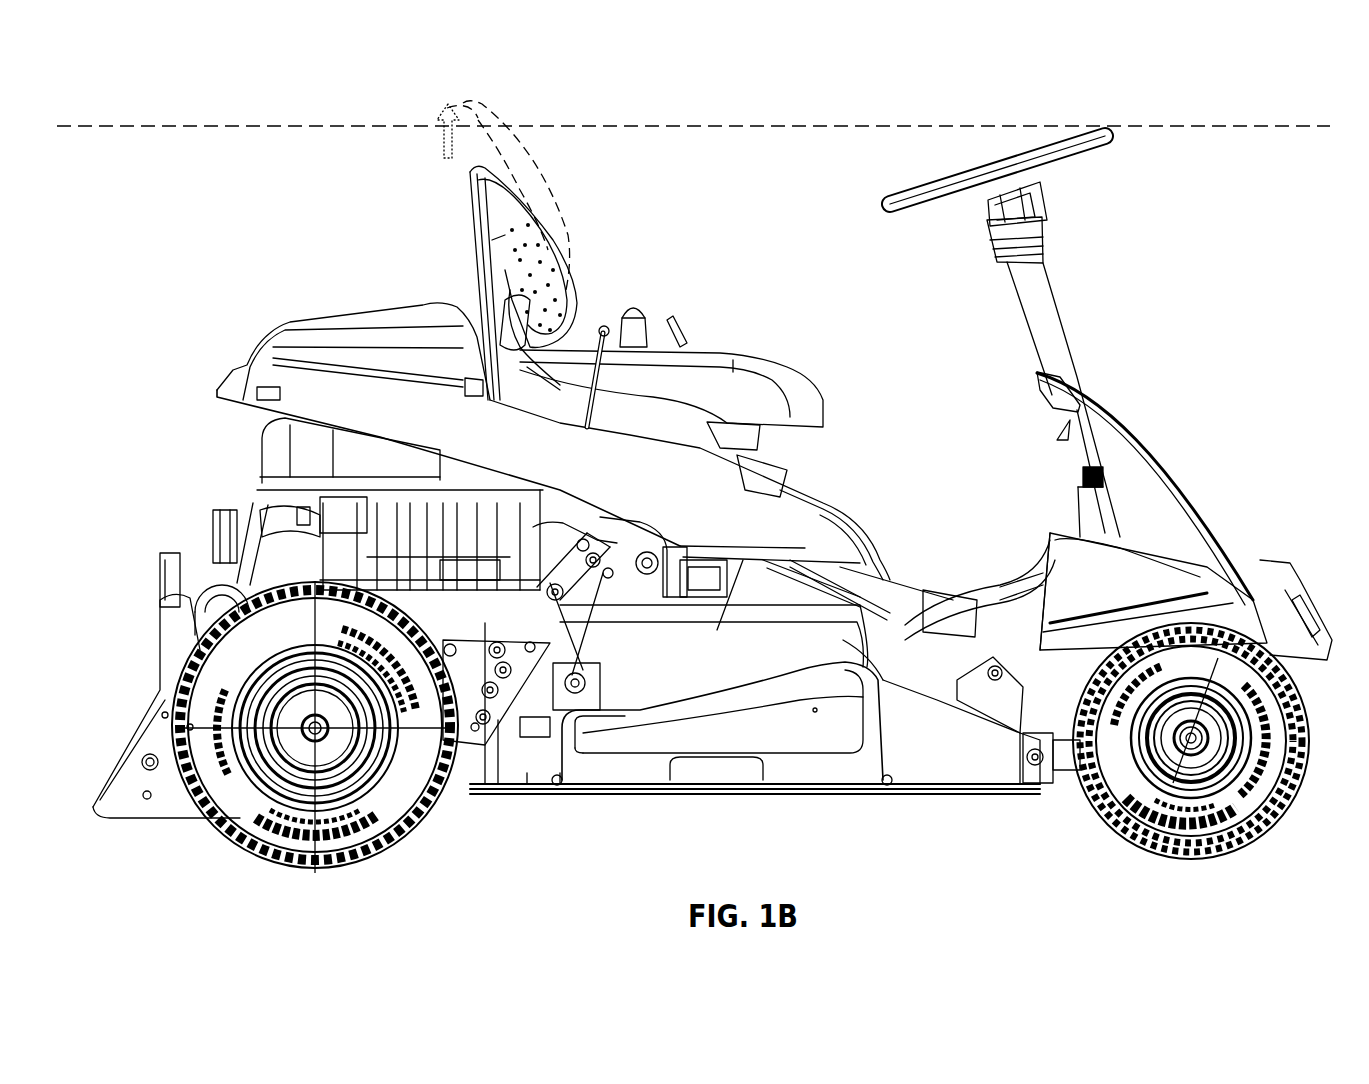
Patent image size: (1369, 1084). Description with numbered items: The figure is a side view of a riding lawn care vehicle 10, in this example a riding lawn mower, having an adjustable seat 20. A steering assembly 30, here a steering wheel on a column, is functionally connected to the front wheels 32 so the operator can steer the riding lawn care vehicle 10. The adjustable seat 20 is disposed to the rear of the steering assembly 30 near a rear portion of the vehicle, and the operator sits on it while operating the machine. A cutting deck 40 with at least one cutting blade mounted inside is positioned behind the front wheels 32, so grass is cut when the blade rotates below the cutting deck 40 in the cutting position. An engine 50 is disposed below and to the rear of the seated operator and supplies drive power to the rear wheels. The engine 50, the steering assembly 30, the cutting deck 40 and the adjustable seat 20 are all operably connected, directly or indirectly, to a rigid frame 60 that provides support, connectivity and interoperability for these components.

The riding lawn care vehicle 10 is at (267, 162).
The adjustable seat 20 is at (581, 257).
The steering assembly 30 is at (958, 136).
The front wheels 32 is at (1208, 850).
The cutting deck 40 is at (873, 750).
The engine 50 is at (241, 489).
The frame 60 is at (1000, 588).